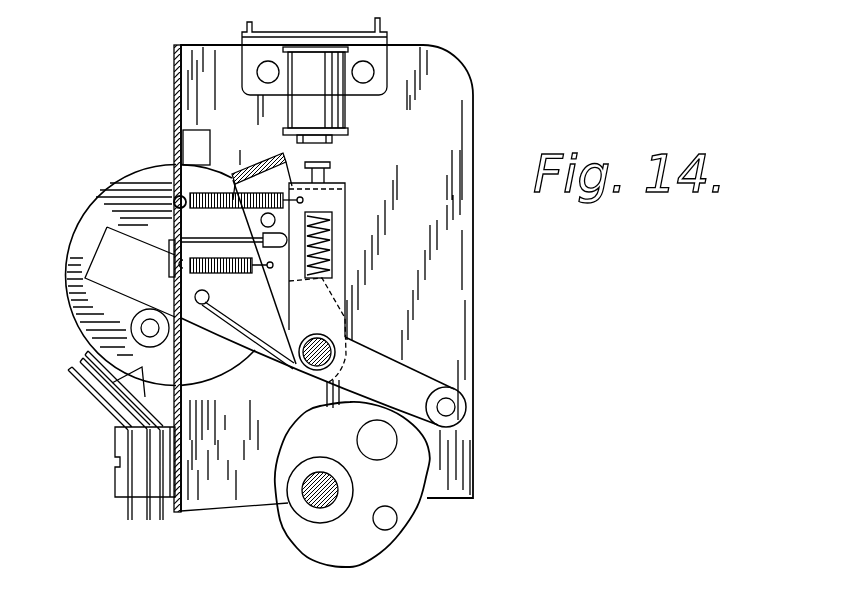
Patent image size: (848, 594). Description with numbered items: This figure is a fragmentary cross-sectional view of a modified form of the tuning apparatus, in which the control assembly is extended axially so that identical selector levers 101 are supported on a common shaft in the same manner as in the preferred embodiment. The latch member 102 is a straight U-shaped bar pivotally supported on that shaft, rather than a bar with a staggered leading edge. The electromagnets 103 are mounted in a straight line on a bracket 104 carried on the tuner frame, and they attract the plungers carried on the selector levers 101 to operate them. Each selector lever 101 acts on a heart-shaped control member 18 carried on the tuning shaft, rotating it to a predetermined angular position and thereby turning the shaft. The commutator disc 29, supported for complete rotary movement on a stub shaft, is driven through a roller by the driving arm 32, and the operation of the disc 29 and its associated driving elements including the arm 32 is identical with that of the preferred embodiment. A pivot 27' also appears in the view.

The bracket 104 is at (378, 53).
The electromagnet 103 is at (335, 117).
The latch member 102 is at (255, 157).
The selector lever 101 is at (410, 382).
The commutator disc 29 is at (128, 180).
The driving arm 32 is at (108, 248).
The pivot shaft 27' is at (284, 372).
The heart-shaped control member 18 is at (377, 542).